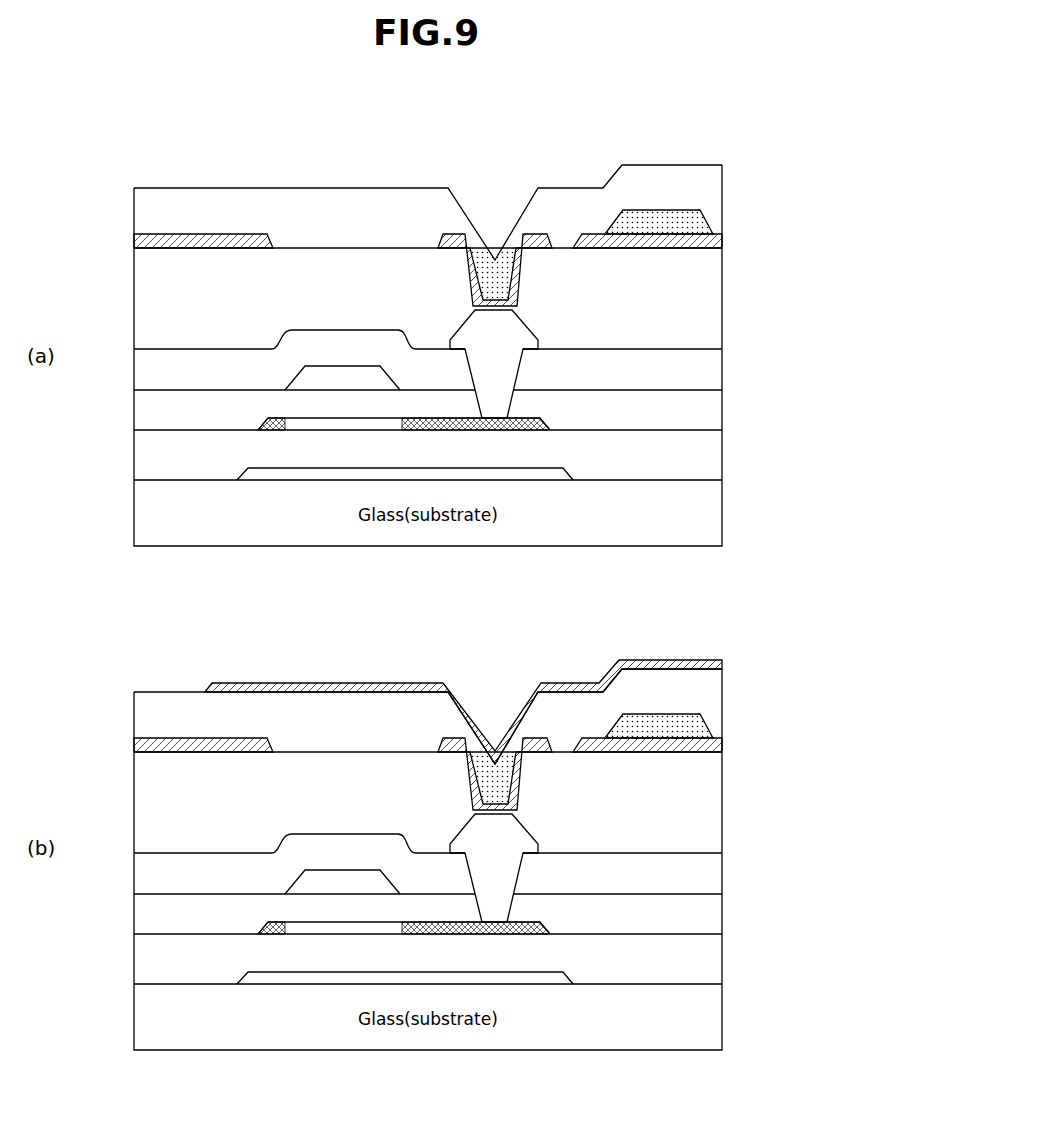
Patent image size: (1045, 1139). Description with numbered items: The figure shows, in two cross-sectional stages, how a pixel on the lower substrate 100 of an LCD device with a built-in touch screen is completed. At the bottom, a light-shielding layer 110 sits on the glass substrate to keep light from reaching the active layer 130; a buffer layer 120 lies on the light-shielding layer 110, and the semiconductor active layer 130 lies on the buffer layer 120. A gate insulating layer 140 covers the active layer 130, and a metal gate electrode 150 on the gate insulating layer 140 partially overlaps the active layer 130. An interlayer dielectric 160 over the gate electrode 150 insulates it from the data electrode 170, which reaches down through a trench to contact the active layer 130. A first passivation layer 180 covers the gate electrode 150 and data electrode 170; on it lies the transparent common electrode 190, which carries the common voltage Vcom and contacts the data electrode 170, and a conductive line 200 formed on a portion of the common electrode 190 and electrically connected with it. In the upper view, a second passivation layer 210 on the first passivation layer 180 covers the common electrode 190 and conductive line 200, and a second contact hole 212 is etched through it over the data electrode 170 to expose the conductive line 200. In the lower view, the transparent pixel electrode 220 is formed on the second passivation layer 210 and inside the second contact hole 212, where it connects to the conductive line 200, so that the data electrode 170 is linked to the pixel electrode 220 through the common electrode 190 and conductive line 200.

The lower substrate 100 is at (492, 648).
The light-shielding layer 110 is at (566, 478).
The buffer layer 120 is at (715, 452).
The active layer 130 is at (548, 427).
The gate insulating layer 140 is at (715, 408).
The gate electrode 150 is at (393, 386).
The interlayer dielectric 160 is at (715, 372).
The data electrode 170 is at (518, 327).
The first passivation layer 180 is at (715, 297).
The common electrode 190 is at (272, 241).
The conductive line 200 is at (503, 297).
The second passivation layer 210 is at (715, 188).
The second contact hole 212 is at (494, 222).
The pixel electrode 220 is at (507, 709).